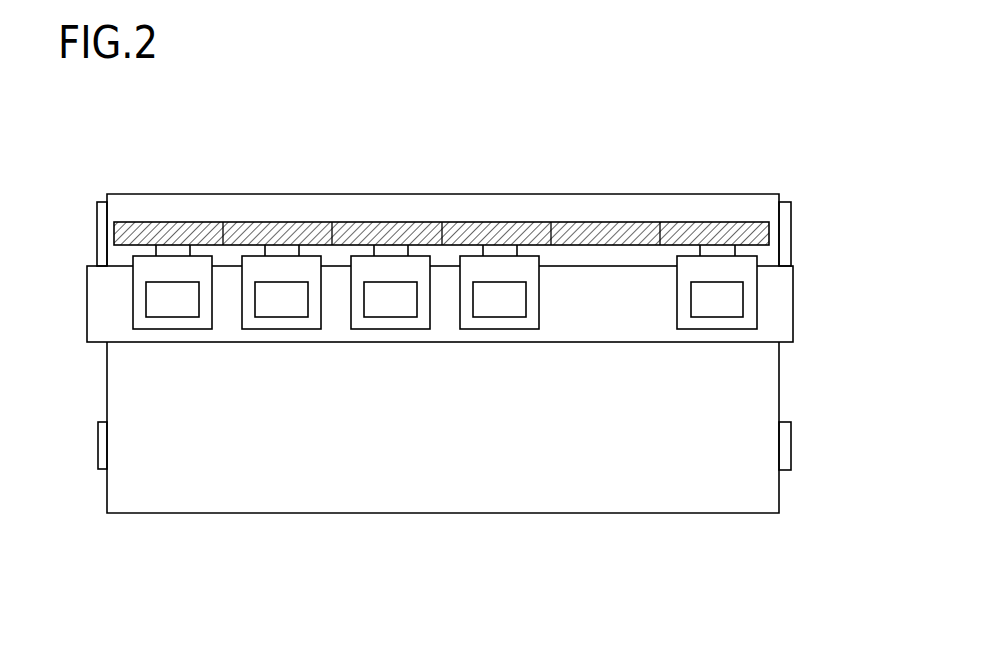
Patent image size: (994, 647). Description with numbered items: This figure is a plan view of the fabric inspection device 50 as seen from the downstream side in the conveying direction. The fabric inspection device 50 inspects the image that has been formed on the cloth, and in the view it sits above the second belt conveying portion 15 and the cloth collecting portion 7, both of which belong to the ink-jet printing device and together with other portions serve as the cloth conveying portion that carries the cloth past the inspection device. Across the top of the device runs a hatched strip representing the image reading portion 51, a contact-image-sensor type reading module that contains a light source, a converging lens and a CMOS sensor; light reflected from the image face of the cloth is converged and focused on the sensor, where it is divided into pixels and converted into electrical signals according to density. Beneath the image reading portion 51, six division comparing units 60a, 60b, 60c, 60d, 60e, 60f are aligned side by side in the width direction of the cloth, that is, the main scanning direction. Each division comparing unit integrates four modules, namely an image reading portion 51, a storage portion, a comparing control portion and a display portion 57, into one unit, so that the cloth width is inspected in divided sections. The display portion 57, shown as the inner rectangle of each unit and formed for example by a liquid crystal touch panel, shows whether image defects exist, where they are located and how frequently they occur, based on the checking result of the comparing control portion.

The fabric inspection device 50 is at (647, 204).
The second belt conveying portion 15 is at (97, 235).
The image reading portion 51 is at (757, 237).
The display portion 57 is at (735, 300).
The division comparing unit 60a is at (862, 247).
The division comparing unit 60b is at (608, 323).
The division comparing unit 60c is at (497, 323).
The division comparing unit 60d is at (387, 323).
The division comparing unit 60e is at (280, 323).
The division comparing unit 60f is at (173, 323).
The cloth collecting portion 7 is at (785, 453).